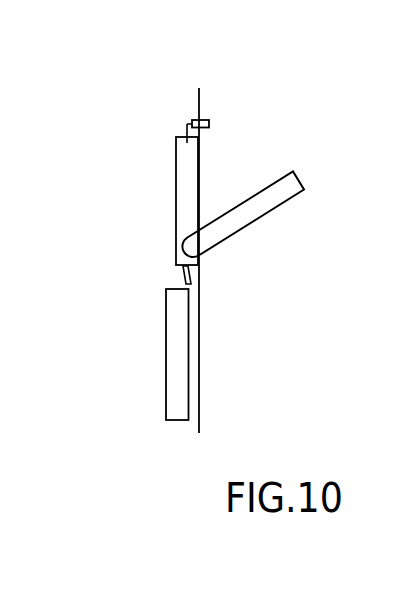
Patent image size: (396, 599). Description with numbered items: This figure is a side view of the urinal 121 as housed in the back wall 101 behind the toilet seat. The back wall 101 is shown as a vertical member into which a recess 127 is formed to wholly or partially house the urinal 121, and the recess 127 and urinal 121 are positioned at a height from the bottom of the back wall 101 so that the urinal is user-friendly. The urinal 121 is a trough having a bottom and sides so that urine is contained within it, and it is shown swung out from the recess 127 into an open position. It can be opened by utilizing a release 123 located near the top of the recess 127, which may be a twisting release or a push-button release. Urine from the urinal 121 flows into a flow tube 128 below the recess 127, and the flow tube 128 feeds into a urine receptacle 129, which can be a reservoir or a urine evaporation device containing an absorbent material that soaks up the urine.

The back wall 101 is at (199, 96).
The urinal 121 is at (297, 177).
The release 123 is at (209, 124).
The recess 127 is at (176, 178).
The flow tube 128 is at (178, 273).
The urine receptacle 129 is at (175, 392).